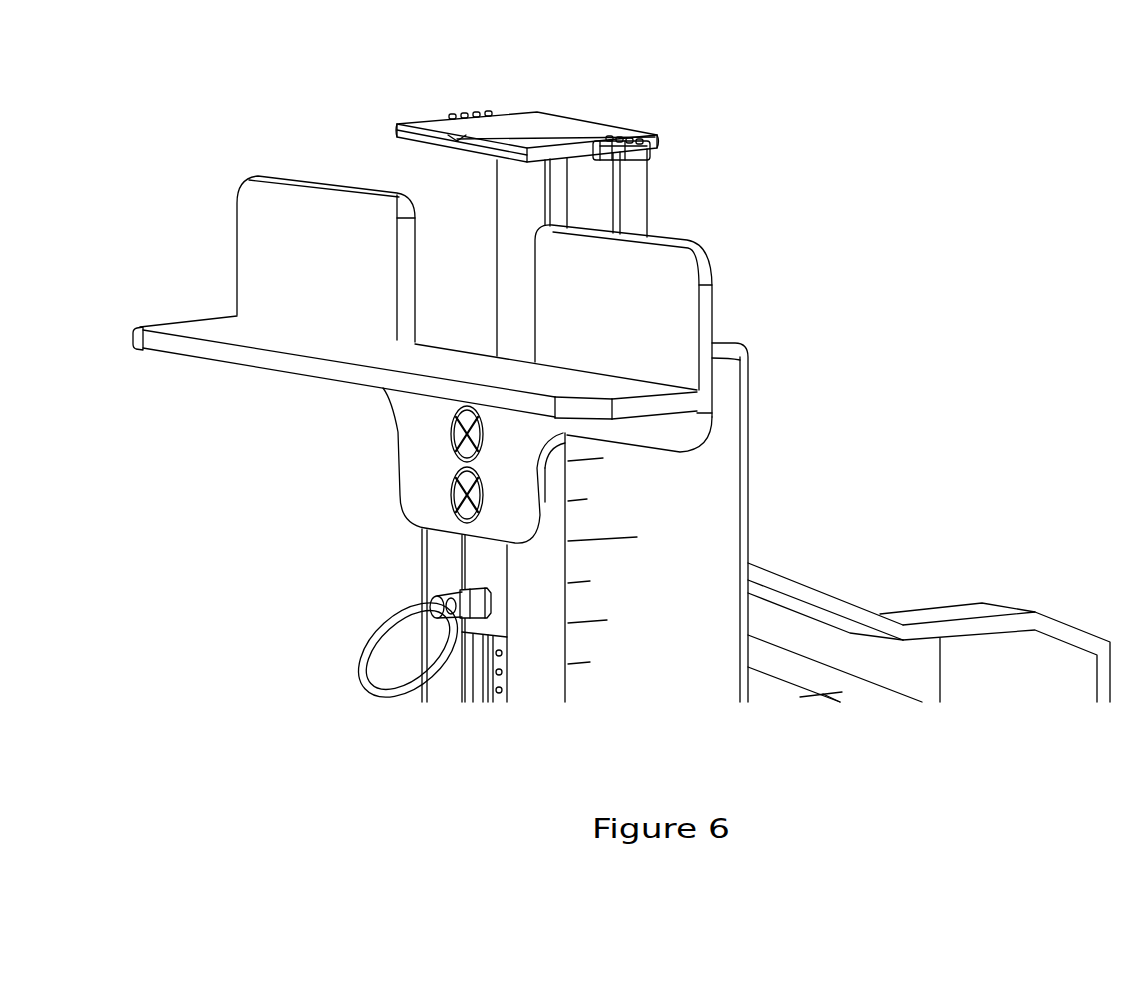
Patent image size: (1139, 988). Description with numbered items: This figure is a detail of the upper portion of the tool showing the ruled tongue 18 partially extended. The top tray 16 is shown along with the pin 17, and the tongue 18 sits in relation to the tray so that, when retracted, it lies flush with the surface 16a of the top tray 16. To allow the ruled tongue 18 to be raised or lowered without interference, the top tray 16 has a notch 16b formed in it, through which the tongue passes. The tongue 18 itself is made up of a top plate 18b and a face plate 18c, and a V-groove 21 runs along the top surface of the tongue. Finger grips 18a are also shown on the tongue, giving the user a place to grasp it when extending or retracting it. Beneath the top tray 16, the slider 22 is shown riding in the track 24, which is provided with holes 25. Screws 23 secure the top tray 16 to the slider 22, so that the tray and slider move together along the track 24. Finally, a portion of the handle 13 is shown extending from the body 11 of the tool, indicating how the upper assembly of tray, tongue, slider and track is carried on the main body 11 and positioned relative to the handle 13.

The post 11 is at (730, 493).
The base 13 is at (873, 605).
The shelf bracket 16 is at (138, 328).
The shelf surface 16a is at (323, 335).
The slot 16b is at (458, 307).
The pull ring 17 is at (377, 623).
The cap assembly 18 is at (667, 107).
The cap tab 18a is at (647, 160).
The cap plate 18b is at (433, 123).
The cap post 18c is at (650, 225).
The slide 21 is at (543, 128).
The hinge pin 22 is at (473, 568).
The screws 23 is at (450, 428).
The hinge plate 24 is at (478, 688).
The holes 25 is at (500, 693).